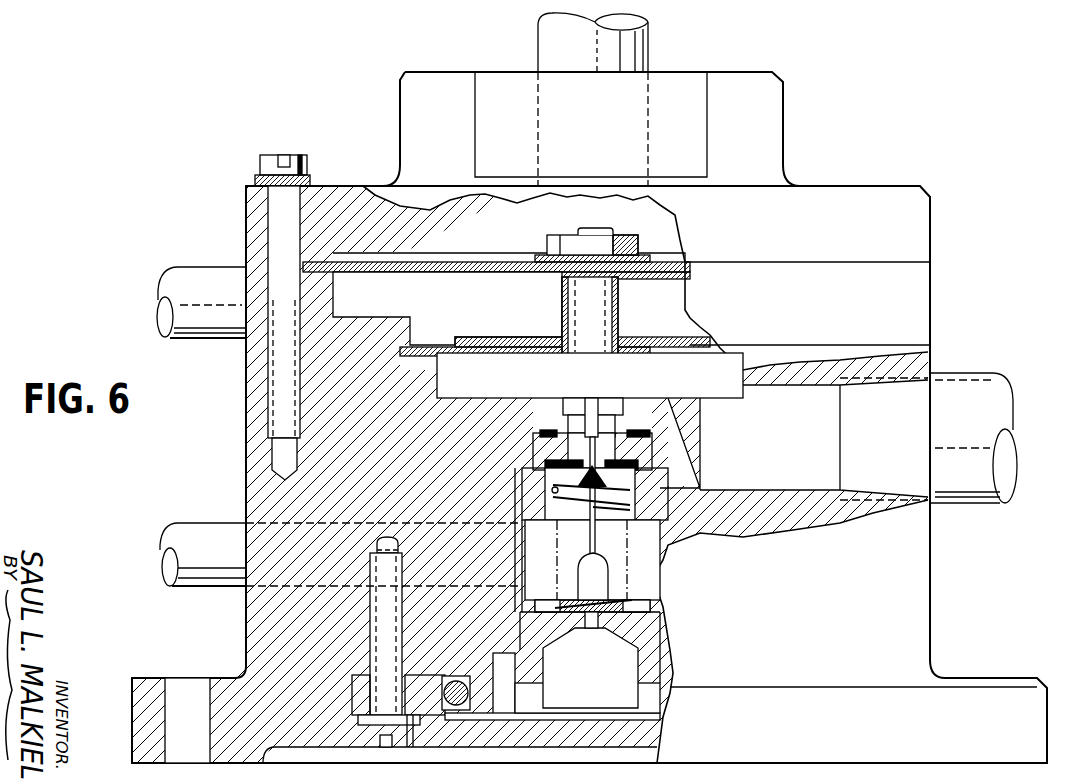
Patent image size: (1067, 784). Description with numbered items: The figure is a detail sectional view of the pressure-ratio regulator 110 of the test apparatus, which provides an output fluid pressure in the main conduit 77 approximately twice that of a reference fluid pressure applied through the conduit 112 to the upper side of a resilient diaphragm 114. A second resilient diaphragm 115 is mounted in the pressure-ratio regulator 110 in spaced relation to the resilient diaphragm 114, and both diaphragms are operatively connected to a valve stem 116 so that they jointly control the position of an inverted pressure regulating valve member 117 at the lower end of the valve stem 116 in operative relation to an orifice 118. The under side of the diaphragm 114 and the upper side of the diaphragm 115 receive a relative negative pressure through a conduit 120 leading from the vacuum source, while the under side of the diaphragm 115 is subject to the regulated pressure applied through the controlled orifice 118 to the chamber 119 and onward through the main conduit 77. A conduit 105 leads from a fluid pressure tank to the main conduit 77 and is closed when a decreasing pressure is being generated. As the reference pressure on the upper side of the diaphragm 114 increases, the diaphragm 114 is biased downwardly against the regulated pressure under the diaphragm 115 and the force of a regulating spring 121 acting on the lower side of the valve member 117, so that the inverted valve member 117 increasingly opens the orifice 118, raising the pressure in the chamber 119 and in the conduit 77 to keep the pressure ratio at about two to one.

The pressure-ratio regulator 110 is at (950, 234).
The conduit 112 is at (650, 52).
The resilient diaphragm 114 is at (483, 262).
The second resilient diaphragm 115 is at (503, 337).
The valve stem 116 is at (597, 311).
The inverted pressure regulating valve member 117 is at (580, 485).
The orifice 118 is at (585, 450).
The chamber 119 is at (513, 383).
The conduit 120 is at (190, 267).
The regulating spring 121 is at (615, 505).
The conduit 105 is at (192, 523).
The main conduit 77 is at (966, 373).